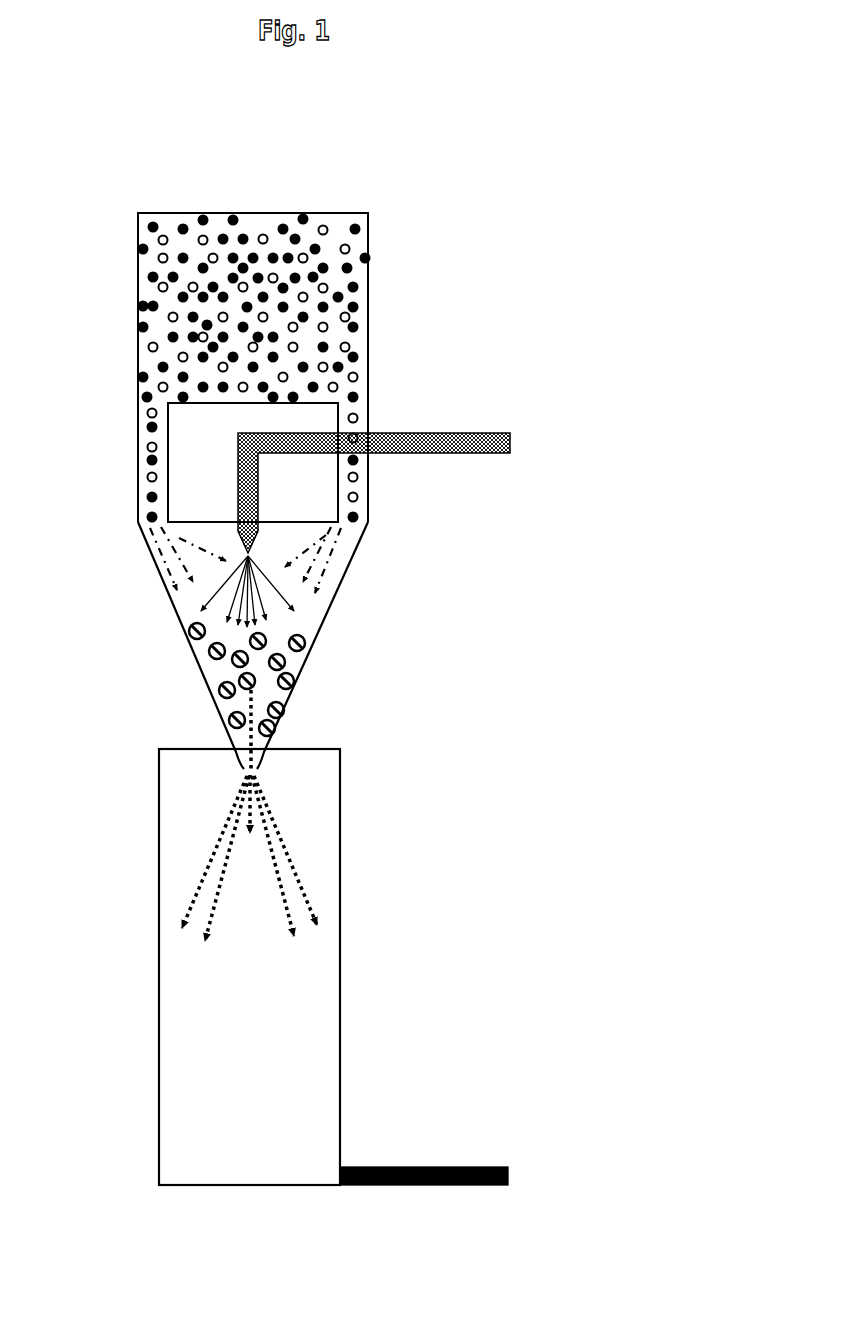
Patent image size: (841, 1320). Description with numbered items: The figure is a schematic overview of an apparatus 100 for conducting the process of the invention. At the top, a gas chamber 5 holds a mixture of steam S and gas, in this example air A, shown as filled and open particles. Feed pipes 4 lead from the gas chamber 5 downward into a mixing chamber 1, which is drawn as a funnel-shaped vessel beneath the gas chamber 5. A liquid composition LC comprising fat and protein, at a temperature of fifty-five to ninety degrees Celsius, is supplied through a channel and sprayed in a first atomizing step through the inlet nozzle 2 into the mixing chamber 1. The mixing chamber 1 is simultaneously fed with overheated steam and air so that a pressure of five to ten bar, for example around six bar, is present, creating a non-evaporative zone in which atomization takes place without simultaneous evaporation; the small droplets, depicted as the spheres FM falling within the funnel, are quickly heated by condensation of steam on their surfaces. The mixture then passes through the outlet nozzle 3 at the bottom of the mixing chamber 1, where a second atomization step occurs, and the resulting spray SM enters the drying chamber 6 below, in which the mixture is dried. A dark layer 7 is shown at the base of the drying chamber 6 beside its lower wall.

The apparatus 100 is at (262, 163).
The gas chamber 5 is at (239, 337).
The steam S is at (305, 213).
The air A is at (352, 249).
The feed pipes 4 is at (364, 410).
The liquid composition LC is at (456, 440).
The mixing chamber 1 is at (178, 617).
The inlet nozzle 2 is at (243, 553).
The fused material droplets FM is at (296, 661).
The outlet nozzle 3 is at (262, 770).
The drying chamber 6 is at (305, 1052).
The sprayed material SM is at (295, 865).
The substrate 7 is at (468, 1166).